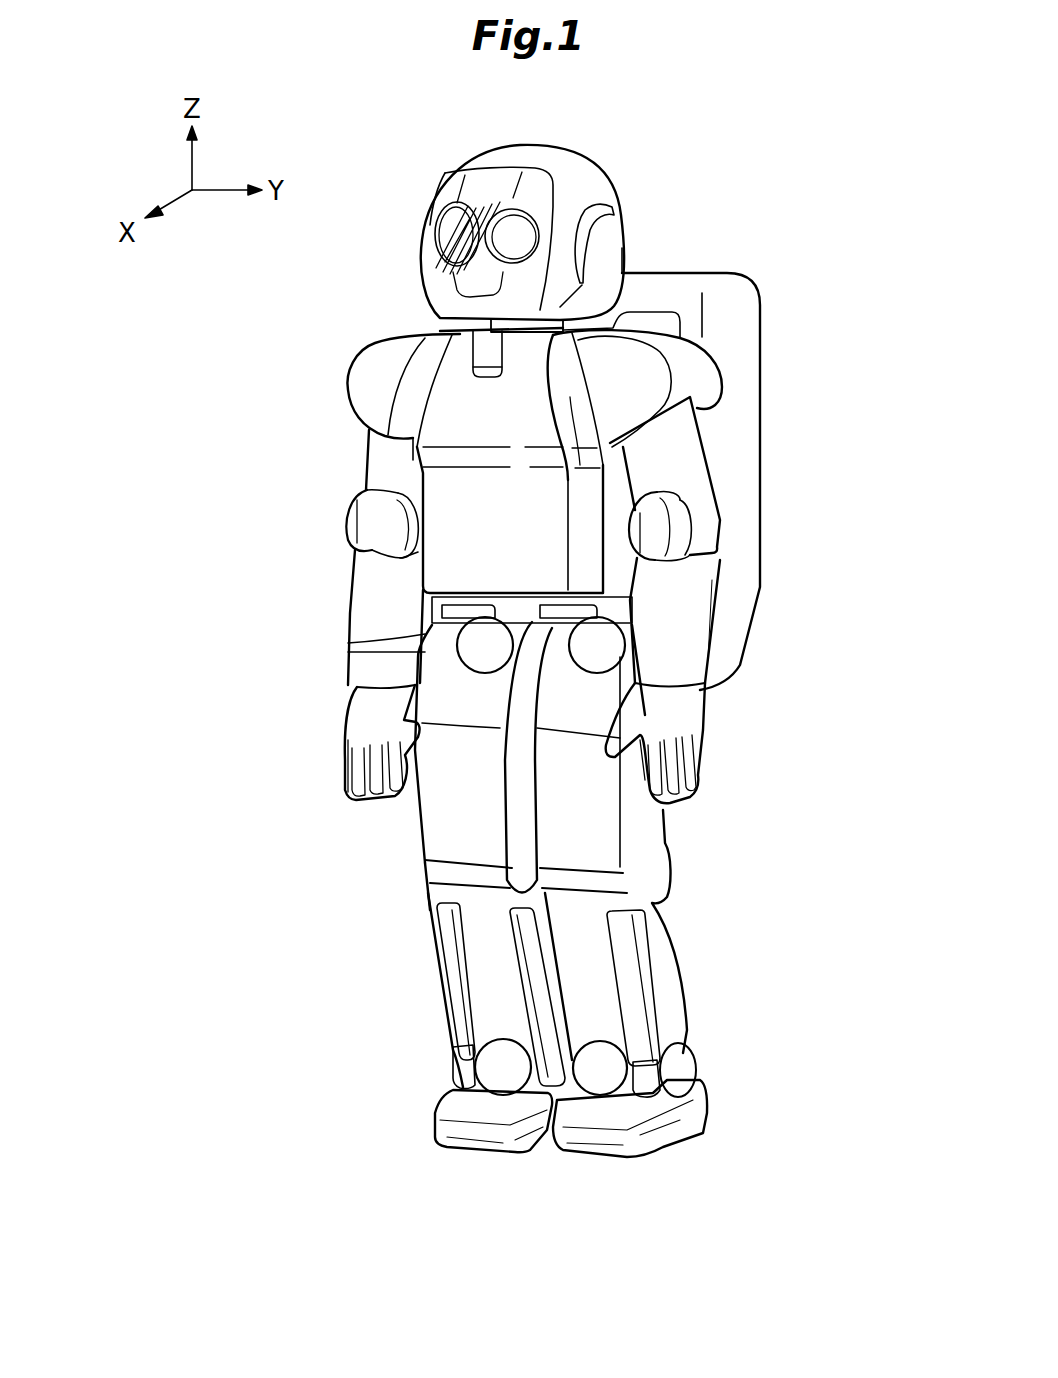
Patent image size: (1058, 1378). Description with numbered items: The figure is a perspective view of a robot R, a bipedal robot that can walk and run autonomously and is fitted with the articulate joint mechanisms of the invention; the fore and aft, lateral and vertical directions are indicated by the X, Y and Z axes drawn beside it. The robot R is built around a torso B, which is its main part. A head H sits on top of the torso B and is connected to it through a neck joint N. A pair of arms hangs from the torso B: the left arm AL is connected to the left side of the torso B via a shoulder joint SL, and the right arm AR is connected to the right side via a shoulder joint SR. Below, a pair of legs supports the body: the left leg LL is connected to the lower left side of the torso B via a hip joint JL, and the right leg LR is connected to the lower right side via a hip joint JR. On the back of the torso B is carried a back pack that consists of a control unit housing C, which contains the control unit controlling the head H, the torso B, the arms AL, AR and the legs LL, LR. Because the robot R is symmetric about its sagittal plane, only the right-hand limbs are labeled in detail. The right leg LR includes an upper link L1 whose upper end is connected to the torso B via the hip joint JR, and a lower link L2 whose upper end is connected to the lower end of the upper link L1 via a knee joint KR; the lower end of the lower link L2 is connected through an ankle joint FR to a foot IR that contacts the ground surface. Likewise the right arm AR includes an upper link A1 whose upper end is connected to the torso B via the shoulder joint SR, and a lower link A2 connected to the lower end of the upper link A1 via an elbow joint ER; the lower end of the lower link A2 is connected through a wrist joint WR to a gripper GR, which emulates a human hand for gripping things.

The robot R is at (406, 309).
The head H is at (565, 158).
The neck joint N is at (607, 333).
The control unit housing C is at (748, 302).
The shoulder joint SR is at (365, 382).
The shoulder joint SL is at (697, 366).
The torso B is at (545, 538).
The arm AR is at (283, 487).
The arm AL is at (733, 450).
The upper link A1 is at (383, 453).
The elbow joint ER is at (365, 520).
The lower link A2 is at (362, 605).
The hip joint JR is at (456, 640).
The hip joint JL is at (618, 642).
The wrist joint WR is at (363, 672).
The gripper GR is at (358, 727).
The leg LR is at (365, 943).
The leg LL is at (713, 912).
The upper link L1 is at (445, 830).
The knee joint KR is at (445, 878).
The lower link L2 is at (455, 962).
The ankle joint FR is at (473, 1080).
The foot IR is at (470, 1120).